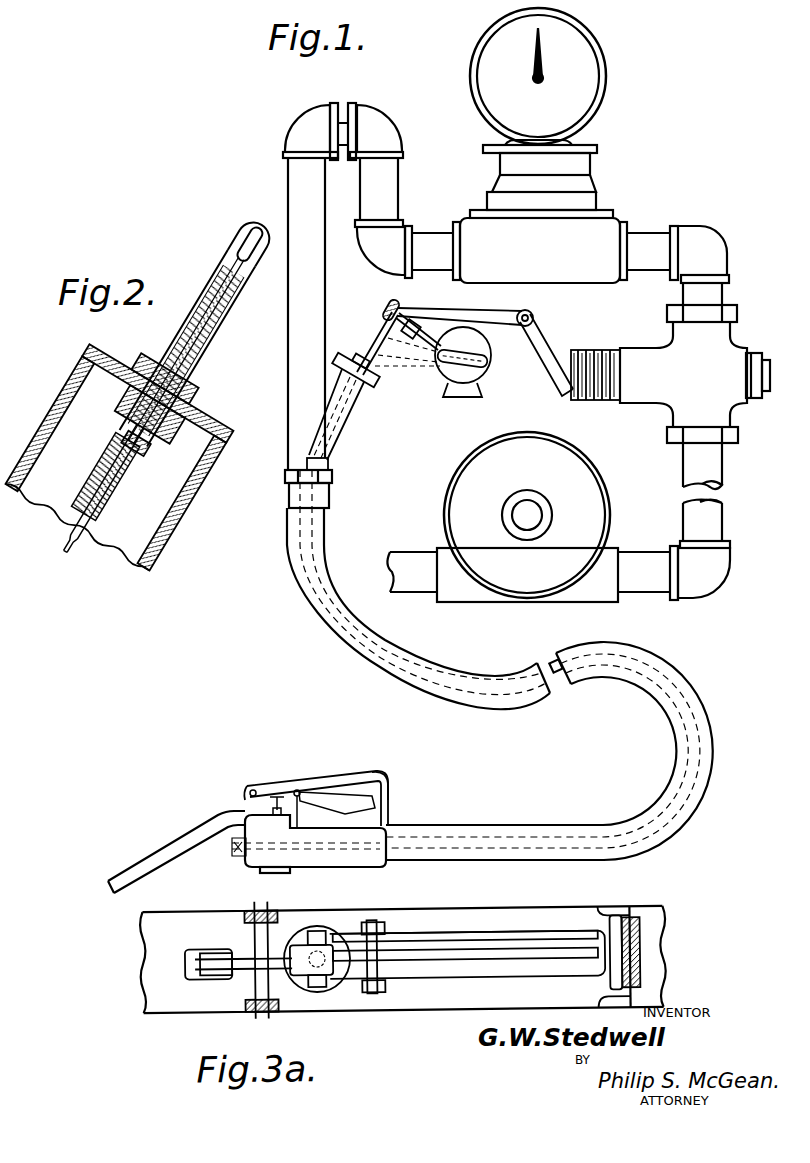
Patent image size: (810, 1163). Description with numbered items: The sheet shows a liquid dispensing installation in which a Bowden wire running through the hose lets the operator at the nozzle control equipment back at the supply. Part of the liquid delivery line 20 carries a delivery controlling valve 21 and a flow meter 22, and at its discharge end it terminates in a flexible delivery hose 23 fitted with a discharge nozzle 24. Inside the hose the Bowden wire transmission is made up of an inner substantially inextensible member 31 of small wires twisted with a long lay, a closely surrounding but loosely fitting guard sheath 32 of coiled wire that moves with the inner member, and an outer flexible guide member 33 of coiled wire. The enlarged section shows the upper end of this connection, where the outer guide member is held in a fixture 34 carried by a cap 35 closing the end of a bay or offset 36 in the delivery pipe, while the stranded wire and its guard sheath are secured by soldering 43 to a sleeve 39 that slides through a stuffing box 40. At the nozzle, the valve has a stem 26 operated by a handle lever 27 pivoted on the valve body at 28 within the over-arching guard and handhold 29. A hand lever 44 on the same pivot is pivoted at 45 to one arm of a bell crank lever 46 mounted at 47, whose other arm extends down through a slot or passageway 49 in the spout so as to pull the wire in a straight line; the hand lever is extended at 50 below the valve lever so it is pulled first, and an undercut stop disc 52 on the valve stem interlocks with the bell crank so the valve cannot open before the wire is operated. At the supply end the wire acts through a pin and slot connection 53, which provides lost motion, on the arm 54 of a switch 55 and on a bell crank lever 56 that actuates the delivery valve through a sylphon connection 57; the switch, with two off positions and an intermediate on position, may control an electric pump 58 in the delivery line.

In FIG. 1, the liquid delivery line 20 is at (686, 470).
In FIG. 1, the delivery controlling valve 21 is at (695, 374).
In FIG. 1, the flow meter 22 is at (604, 181).
In FIG. 1, the flexible delivery hose 23 is at (326, 622).
In FIG. 1, the discharge nozzle 24 is at (183, 841).
In FIG. 3a, the stem 26 is at (299, 994).
In FIG. 3a, the handle lever 27 is at (498, 950).
In FIG. 1, the pivot 28 is at (298, 790).
In FIG. 3a, the pivot 28 is at (390, 946).
In FIG. 1, the guard and handhold 29 is at (356, 773).
In FIG. 2, the inner inextensible member 31 is at (208, 329).
In FIG. 2, the guard sheath 32 is at (121, 492).
In FIG. 2, the outer flexible guide member 33 is at (100, 490).
In FIG. 2, the fixture 34 is at (151, 456).
In FIG. 1, the cap 35 is at (342, 357).
In FIG. 2, the cap 35 is at (130, 364).
In FIG. 1, the bay or offset 36 is at (346, 422).
In FIG. 2, the bay or offset 36 is at (162, 543).
In FIG. 1, the sleeve 39 is at (376, 329).
In FIG. 2, the sleeve 39 is at (207, 358).
In FIG. 2, the stuffing box 40 is at (193, 399).
In FIG. 2, the soldering 43 is at (240, 299).
In FIG. 1, the hand lever 44 is at (384, 787).
In FIG. 3a, the hand lever 44 is at (598, 913).
In FIG. 3a, the pivot 45 is at (318, 929).
In FIG. 3a, the bell crank lever 46 is at (206, 966).
In FIG. 1, the pivot 47 is at (250, 792).
In FIG. 3a, the pivot 47 is at (256, 935).
In FIG. 3a, the slot or passageway 49 is at (200, 978).
In FIG. 1, the extension of hand lever 50 is at (374, 803).
In FIG. 3a, the undercut stop disc 52 is at (326, 936).
In FIG. 1, the pin and slot connection 53 is at (388, 304).
In FIG. 2, the pin and slot connection 53 is at (233, 256).
In FIG. 1, the switch arm 54 is at (418, 330).
In FIG. 1, the switch 55 is at (489, 371).
In FIG. 1, the bell crank lever 56 is at (487, 313).
In FIG. 1, the sylphon connection 57 is at (569, 389).
In FIG. 1, the electric pump 58 is at (502, 517).